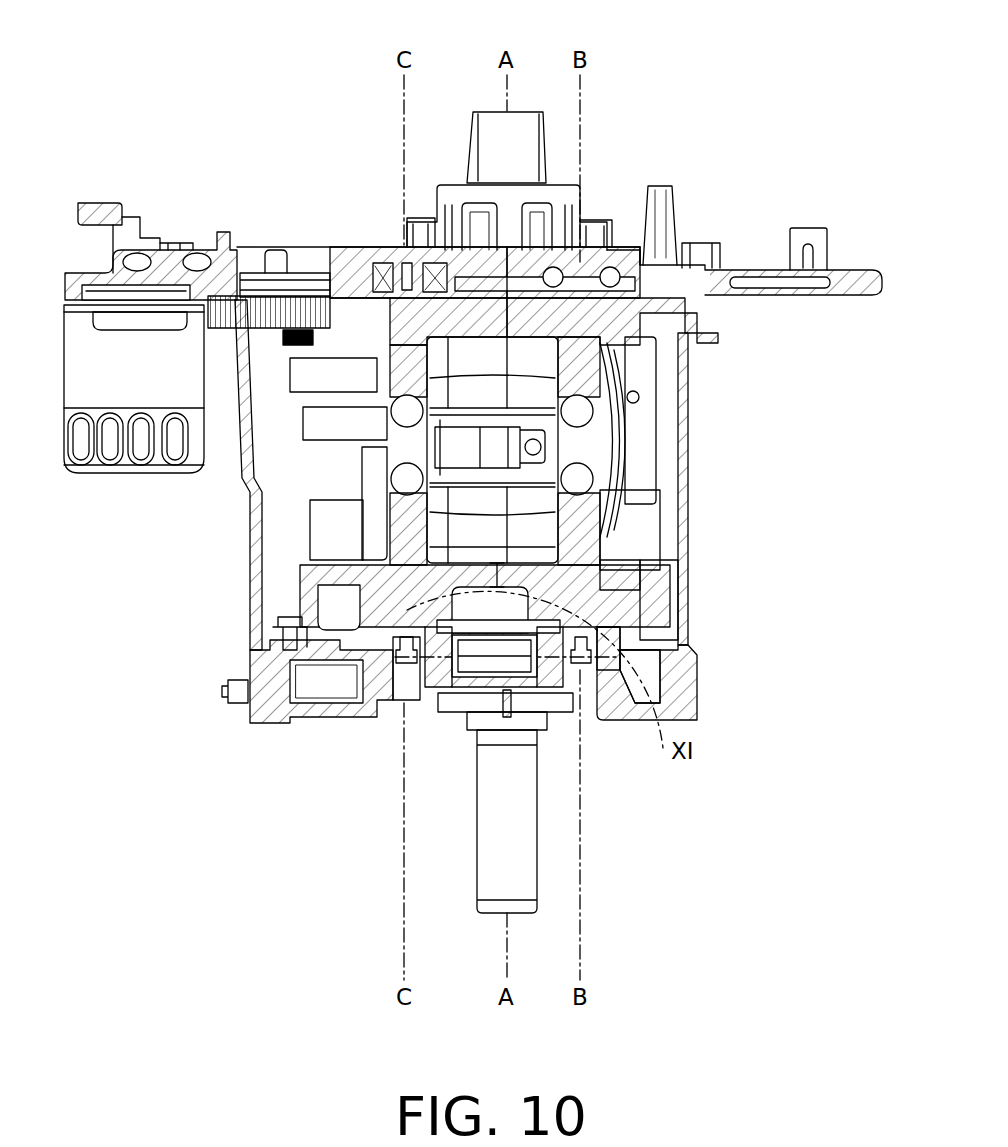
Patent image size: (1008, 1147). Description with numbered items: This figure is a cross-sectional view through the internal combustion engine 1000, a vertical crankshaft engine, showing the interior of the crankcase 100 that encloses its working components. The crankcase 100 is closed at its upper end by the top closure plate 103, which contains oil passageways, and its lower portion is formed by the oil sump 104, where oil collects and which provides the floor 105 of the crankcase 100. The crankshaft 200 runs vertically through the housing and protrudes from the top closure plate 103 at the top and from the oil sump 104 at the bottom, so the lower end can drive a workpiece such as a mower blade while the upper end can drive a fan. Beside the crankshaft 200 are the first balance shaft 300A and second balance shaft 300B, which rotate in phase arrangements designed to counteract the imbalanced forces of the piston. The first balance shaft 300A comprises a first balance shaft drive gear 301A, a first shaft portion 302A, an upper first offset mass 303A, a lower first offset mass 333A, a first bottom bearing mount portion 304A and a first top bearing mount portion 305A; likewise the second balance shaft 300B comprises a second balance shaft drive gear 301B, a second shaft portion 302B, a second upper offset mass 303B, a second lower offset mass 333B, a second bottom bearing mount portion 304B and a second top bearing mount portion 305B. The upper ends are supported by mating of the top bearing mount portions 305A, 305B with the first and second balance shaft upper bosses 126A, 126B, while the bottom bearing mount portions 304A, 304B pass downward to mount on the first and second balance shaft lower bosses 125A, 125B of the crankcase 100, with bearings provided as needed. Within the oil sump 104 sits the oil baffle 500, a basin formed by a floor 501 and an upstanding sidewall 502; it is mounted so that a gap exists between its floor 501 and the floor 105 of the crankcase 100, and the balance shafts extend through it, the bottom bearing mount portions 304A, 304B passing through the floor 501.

The internal combustion engine 1000 is at (812, 103).
The crankcase 100 is at (692, 427).
The top closure plate 103 is at (683, 288).
The oil sump 104 is at (683, 577).
The floor of the crankcase 105 is at (292, 700).
The first balance shaft lower boss 125A is at (625, 640).
The second balance shaft lower boss 125B is at (380, 640).
The first balance shaft upper boss 126A is at (648, 262).
The second balance shaft upper boss 126B is at (345, 297).
The crankshaft 200 is at (497, 835).
The first balance shaft 300A is at (627, 324).
The second balance shaft 300B is at (420, 338).
The first balance shaft drive gear 301A is at (662, 572).
The second balance shaft drive gear 301B is at (365, 615).
The first shaft portion 302A is at (600, 510).
The second shaft portion 302B is at (403, 507).
The upper first offset mass 303A is at (604, 354).
The second upper offset mass 303B is at (352, 320).
The first bottom bearing mount portion 304A is at (613, 647).
The second bottom bearing mount portion 304B is at (397, 652).
The first top bearing mount portion 305A is at (590, 268).
The second top bearing mount portion 305B is at (397, 250).
The lower first offset mass 333A is at (617, 595).
The second lower offset mass 333B is at (380, 640).
The oil baffle 500 is at (303, 540).
The floor of the oil baffle 501 is at (393, 595).
The upstanding sidewall 502 is at (313, 502).